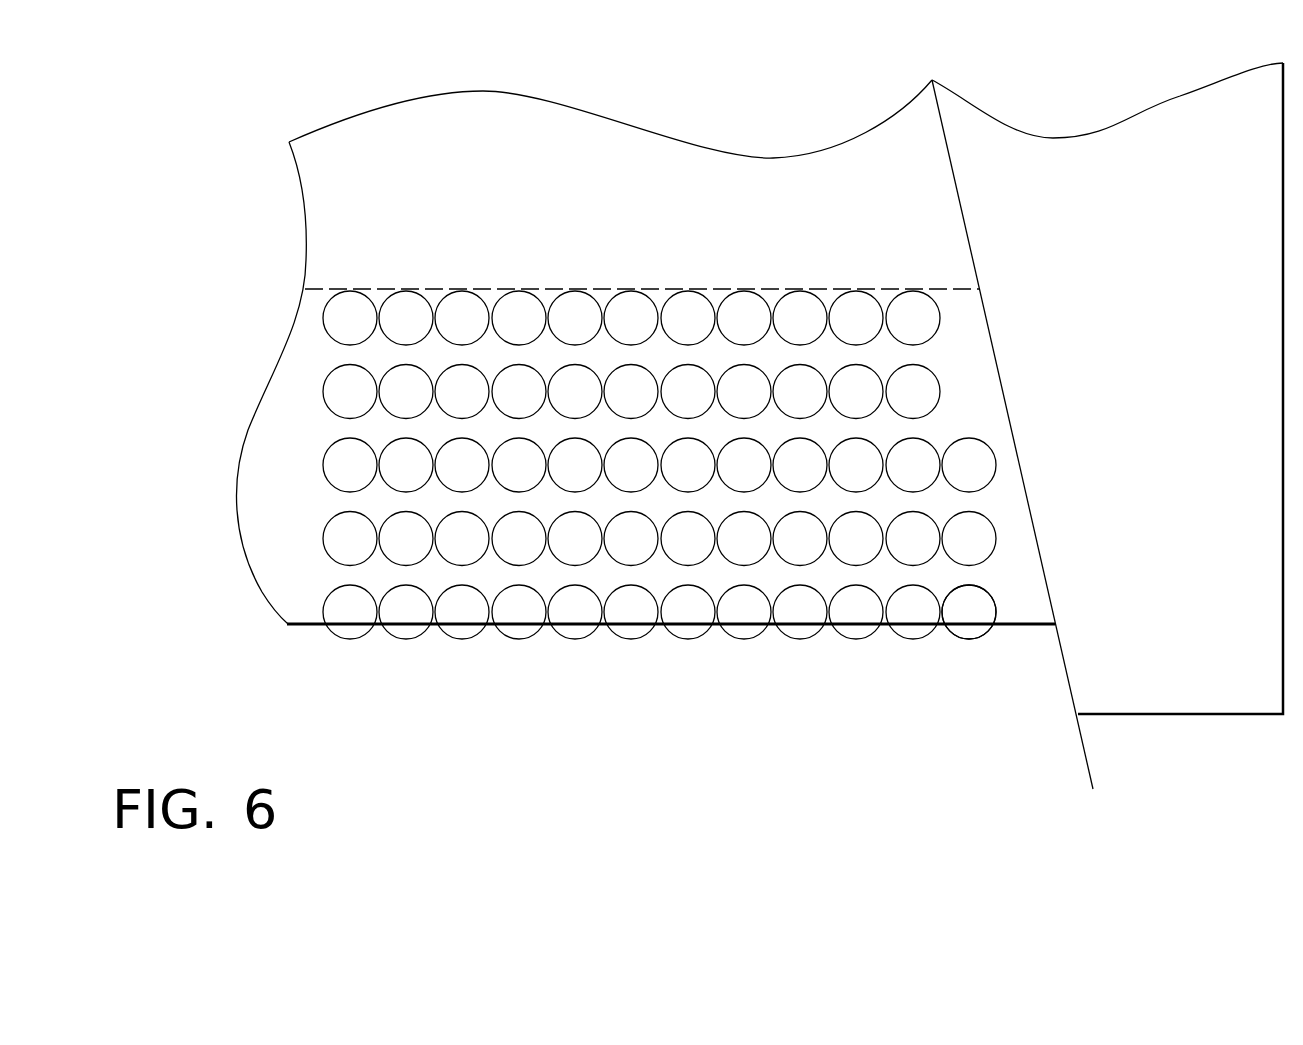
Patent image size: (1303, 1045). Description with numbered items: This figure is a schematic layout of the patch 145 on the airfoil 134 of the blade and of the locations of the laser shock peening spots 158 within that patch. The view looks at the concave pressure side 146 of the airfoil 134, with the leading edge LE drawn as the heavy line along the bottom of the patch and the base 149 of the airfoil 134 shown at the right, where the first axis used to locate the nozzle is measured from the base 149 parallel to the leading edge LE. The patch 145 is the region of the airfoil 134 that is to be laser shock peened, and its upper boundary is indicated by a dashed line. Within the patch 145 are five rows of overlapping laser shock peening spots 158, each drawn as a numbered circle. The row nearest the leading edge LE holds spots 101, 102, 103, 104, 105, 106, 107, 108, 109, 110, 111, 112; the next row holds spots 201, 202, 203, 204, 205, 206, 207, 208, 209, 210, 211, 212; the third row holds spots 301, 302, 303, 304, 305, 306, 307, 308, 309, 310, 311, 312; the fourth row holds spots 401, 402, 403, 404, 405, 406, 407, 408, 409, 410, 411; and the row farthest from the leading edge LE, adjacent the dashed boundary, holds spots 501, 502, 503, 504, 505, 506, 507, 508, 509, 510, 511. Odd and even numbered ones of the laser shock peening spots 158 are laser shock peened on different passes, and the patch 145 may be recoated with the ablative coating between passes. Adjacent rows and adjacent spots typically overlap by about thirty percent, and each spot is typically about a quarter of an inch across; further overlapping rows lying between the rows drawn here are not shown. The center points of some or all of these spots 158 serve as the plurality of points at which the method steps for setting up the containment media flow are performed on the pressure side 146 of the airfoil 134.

The airfoil 134 is at (533, 92).
The patch 145 is at (603, 290).
The pressure side 146 is at (480, 171).
The base 149 is at (943, 123).
The laser shock peening spot 158 is at (968, 642).
The leading edge LE is at (310, 627).
The laser shock peening spot 101 is at (350, 612).
The laser shock peening spot 102 is at (406, 612).
The laser shock peening spot 103 is at (462, 612).
The laser shock peening spot 104 is at (519, 612).
The laser shock peening spot 105 is at (575, 612).
The laser shock peening spot 106 is at (631, 612).
The laser shock peening spot 107 is at (688, 612).
The laser shock peening spot 108 is at (744, 612).
The laser shock peening spot 109 is at (800, 612).
The laser shock peening spot 110 is at (856, 612).
The laser shock peening spot 111 is at (913, 612).
The laser shock peening spot 112 is at (969, 612).
The laser shock peening spot 201 is at (350, 539).
The laser shock peening spot 202 is at (406, 539).
The laser shock peening spot 203 is at (462, 539).
The laser shock peening spot 204 is at (519, 539).
The laser shock peening spot 205 is at (575, 539).
The laser shock peening spot 206 is at (631, 539).
The laser shock peening spot 207 is at (688, 539).
The laser shock peening spot 208 is at (744, 539).
The laser shock peening spot 209 is at (800, 539).
The laser shock peening spot 210 is at (856, 539).
The laser shock peening spot 211 is at (913, 539).
The laser shock peening spot 212 is at (969, 539).
The laser shock peening spot 301 is at (350, 465).
The laser shock peening spot 302 is at (406, 465).
The laser shock peening spot 303 is at (462, 465).
The laser shock peening spot 304 is at (519, 465).
The laser shock peening spot 305 is at (575, 465).
The laser shock peening spot 306 is at (631, 465).
The laser shock peening spot 307 is at (688, 465).
The laser shock peening spot 308 is at (744, 465).
The laser shock peening spot 309 is at (800, 465).
The laser shock peening spot 310 is at (856, 465).
The laser shock peening spot 311 is at (913, 465).
The laser shock peening spot 312 is at (969, 465).
The laser shock peening spot 401 is at (350, 392).
The laser shock peening spot 402 is at (406, 392).
The laser shock peening spot 403 is at (462, 392).
The laser shock peening spot 404 is at (519, 392).
The laser shock peening spot 405 is at (575, 392).
The laser shock peening spot 406 is at (631, 392).
The laser shock peening spot 407 is at (688, 392).
The laser shock peening spot 408 is at (744, 392).
The laser shock peening spot 409 is at (800, 392).
The laser shock peening spot 410 is at (856, 392).
The laser shock peening spot 411 is at (913, 392).
The laser shock peening spot 501 is at (350, 318).
The laser shock peening spot 502 is at (406, 318).
The laser shock peening spot 503 is at (462, 318).
The laser shock peening spot 504 is at (519, 318).
The laser shock peening spot 505 is at (575, 318).
The laser shock peening spot 506 is at (631, 318).
The laser shock peening spot 507 is at (688, 318).
The laser shock peening spot 508 is at (744, 318).
The laser shock peening spot 509 is at (800, 318).
The laser shock peening spot 510 is at (856, 318).
The laser shock peening spot 511 is at (913, 318).